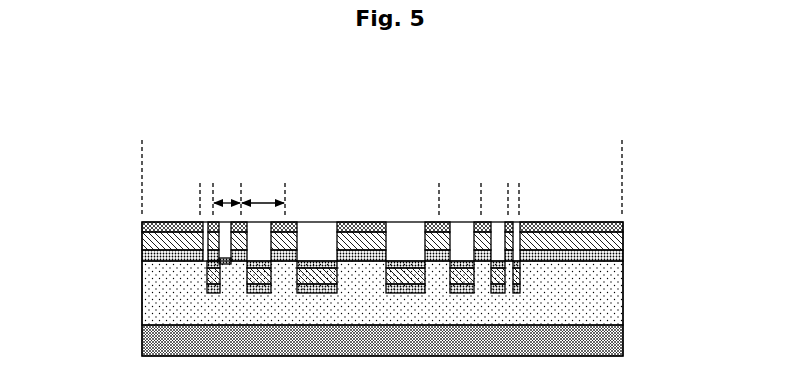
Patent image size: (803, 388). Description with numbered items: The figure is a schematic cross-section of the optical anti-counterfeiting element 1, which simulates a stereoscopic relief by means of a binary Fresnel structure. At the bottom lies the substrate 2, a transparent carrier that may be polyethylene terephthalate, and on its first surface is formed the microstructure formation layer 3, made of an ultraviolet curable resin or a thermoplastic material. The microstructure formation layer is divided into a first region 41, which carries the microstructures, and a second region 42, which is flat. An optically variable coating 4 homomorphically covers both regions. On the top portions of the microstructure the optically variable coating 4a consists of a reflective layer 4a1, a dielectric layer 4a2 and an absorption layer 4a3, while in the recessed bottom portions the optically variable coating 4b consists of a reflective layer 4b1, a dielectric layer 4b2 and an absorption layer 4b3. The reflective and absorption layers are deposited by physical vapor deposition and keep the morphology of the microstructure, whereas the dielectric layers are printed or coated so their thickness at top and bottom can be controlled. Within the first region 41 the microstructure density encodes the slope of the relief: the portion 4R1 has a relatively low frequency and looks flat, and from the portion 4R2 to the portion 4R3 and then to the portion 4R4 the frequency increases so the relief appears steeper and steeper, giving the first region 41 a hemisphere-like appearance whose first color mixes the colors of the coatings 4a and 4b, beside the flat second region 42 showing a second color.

The optical anti-counterfeiting element 1 is at (660, 268).
The substrate 2 is at (612, 348).
The microstructure formation layer 3 is at (612, 315).
The optically variable coating 4 is at (357, 267).
The optically variable coating at the top portion of the microstructure 4a is at (319, 237).
The reflective layer 4a1 is at (140, 258).
The dielectric layer 4a2 is at (140, 240).
The absorption layer 4a3 is at (140, 227).
The optically variable coating at the bottom portion of the microstructure 4b is at (282, 294).
The reflective layer 4b1 is at (211, 294).
The dielectric layer 4b2 is at (211, 276).
The absorption layer 4b3 is at (211, 262).
The first region 41 is at (142, 120).
The second region 42 is at (623, 120).
The portion 4R1 of the first region 4R1 is at (286, 203).
The portion 4R2 of the first region 4R2 is at (480, 203).
The portion 4R3 of the first region 4R3 is at (482, 203).
The portion 4R4 of the first region 4R4 is at (517, 198).